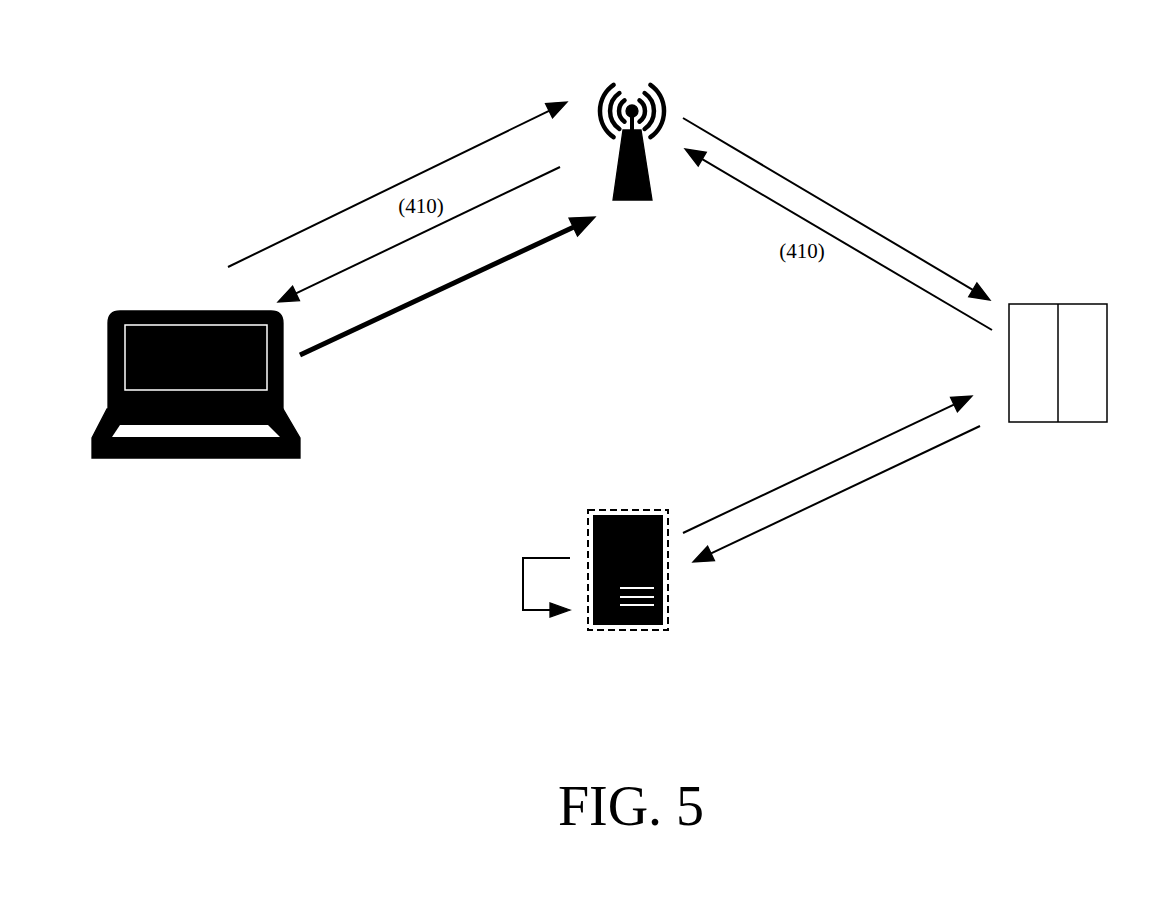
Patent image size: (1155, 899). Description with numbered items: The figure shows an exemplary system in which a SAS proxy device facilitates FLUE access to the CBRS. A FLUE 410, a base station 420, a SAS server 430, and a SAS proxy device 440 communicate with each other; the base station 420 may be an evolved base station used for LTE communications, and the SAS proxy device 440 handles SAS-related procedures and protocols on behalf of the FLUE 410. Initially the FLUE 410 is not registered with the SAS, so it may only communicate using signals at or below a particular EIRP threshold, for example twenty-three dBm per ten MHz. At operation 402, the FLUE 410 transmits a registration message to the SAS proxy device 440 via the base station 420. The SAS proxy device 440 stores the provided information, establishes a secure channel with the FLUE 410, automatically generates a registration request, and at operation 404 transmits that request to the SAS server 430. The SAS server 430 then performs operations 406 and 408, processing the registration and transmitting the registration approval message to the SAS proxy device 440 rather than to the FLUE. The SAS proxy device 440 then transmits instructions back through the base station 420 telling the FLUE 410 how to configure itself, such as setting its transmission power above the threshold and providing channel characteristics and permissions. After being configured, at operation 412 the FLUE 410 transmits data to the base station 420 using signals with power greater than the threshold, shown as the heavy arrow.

The FLUE 410 is at (196, 349).
The base station 420 is at (632, 106).
The SAS server 430 is at (628, 543).
The SAS proxy device 440 is at (1052, 327).
The registration message transmission operation 402 is at (609, 201).
The registration request transmission operation 404 is at (836, 494).
The SAS server registration processing operation 406 is at (514, 587).
The registration approval transmission operation 408 is at (827, 464).
The high-power data transmission operation 412 is at (460, 286).